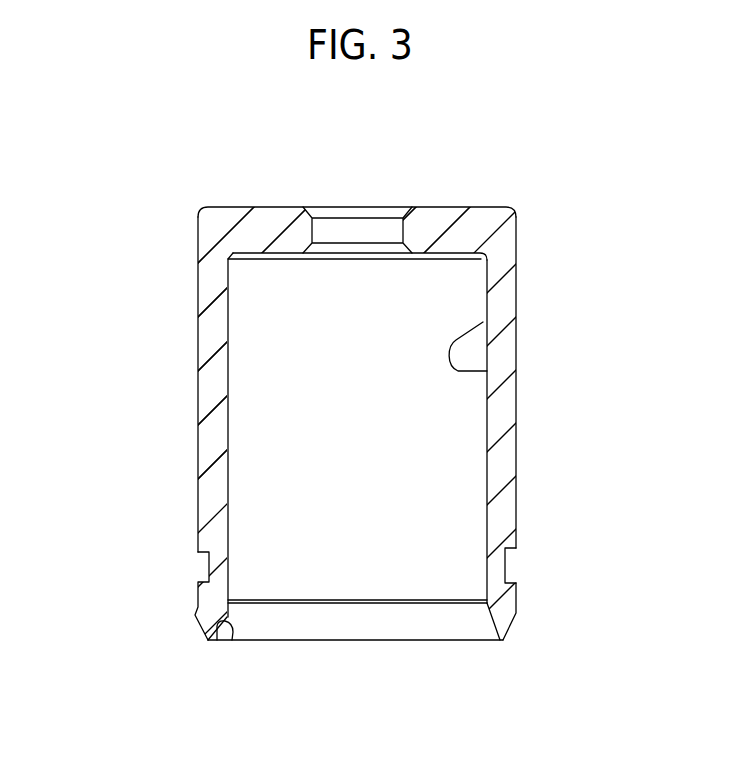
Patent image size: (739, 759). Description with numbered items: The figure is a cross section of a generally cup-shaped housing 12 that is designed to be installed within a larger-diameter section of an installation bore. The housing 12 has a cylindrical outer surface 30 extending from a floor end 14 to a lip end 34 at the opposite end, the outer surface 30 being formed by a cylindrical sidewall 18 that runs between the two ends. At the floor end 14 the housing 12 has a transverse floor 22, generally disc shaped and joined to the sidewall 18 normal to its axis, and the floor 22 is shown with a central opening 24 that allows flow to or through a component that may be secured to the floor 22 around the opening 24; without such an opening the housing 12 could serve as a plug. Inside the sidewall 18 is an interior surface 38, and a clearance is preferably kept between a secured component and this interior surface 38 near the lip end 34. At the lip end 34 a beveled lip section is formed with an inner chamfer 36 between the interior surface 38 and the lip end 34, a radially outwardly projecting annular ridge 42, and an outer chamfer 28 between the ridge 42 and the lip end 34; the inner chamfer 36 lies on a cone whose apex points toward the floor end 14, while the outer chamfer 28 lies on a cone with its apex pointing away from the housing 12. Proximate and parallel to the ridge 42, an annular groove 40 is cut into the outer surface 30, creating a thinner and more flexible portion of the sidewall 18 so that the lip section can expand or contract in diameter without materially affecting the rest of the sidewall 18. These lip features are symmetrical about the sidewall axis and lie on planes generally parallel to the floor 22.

The housing 12 is at (532, 251).
The floor end 14 is at (238, 207).
The cylindrical sidewall 18 is at (498, 468).
The transverse floor 22 is at (297, 233).
The central opening 24 is at (360, 228).
The outer chamfer 28 is at (193, 625).
The cylindrical outer surface 30 is at (518, 404).
The lip end 34 is at (468, 640).
The inner chamfer 36 is at (227, 643).
The interior surface 38 is at (483, 322).
The annular groove 40 is at (508, 562).
The annular ridge 42 is at (516, 613).